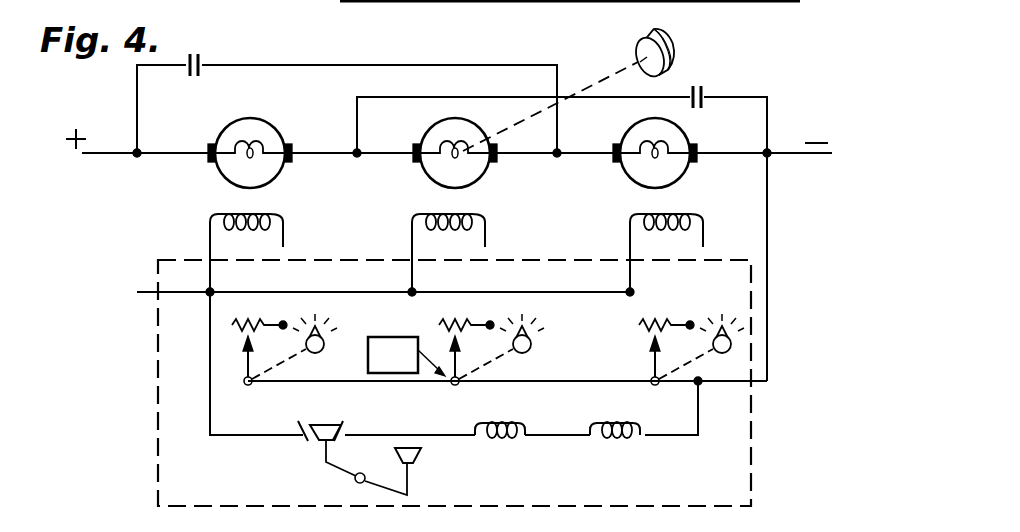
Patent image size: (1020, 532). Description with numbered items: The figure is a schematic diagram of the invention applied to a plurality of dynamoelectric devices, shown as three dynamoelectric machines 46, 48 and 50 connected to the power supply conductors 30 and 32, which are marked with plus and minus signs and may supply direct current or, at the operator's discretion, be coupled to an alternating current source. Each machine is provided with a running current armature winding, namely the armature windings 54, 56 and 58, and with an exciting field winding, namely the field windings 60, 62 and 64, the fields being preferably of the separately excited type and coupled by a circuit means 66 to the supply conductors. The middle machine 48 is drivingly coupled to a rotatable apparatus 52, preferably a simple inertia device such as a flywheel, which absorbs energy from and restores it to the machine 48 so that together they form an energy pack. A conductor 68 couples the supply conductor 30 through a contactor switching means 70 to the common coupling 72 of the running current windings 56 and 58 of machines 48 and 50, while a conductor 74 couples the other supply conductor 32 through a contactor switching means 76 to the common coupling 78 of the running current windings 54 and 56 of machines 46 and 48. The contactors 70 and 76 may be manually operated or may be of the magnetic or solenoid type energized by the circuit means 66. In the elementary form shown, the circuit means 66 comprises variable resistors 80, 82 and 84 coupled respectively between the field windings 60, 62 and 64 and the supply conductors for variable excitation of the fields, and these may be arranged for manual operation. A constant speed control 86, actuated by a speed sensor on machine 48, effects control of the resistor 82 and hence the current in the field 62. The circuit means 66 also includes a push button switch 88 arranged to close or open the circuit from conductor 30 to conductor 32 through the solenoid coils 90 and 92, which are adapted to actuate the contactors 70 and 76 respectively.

The power supply conductor 30 is at (106, 158).
The power supply conductor 32 is at (797, 158).
The dynamoelectric machine 46 is at (290, 168).
The dynamoelectric machine 48 is at (496, 168).
The dynamoelectric machine 50 is at (697, 169).
The rotatable apparatus 52 is at (669, 50).
The running current armature winding 54 is at (247, 157).
The running current armature winding 56 is at (445, 162).
The running current armature winding 58 is at (648, 158).
The exciting field winding 60 is at (241, 222).
The exciting field winding 62 is at (443, 222).
The exciting field winding 64 is at (660, 222).
The circuit means 66 is at (158, 422).
The conductor 68 is at (336, 65).
The contactor switching means 70 is at (200, 70).
The common coupling 72 is at (586, 155).
The conductor 74 is at (599, 97).
The contactor switching means 76 is at (703, 102).
The common coupling 78 is at (329, 151).
The variable resistor 80 is at (234, 362).
The variable resistor 82 is at (438, 386).
The variable resistor 84 is at (636, 365).
The constant speed control 86 is at (406, 356).
The push button switch 88 is at (300, 465).
The solenoid coil 90 is at (486, 446).
The solenoid coil 92 is at (618, 446).